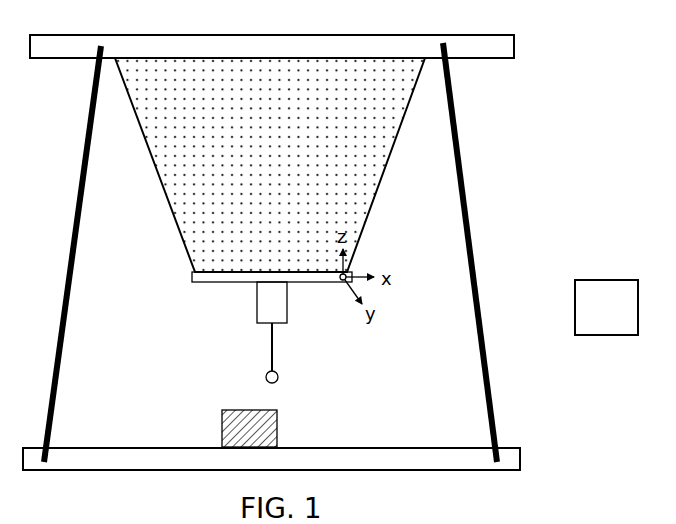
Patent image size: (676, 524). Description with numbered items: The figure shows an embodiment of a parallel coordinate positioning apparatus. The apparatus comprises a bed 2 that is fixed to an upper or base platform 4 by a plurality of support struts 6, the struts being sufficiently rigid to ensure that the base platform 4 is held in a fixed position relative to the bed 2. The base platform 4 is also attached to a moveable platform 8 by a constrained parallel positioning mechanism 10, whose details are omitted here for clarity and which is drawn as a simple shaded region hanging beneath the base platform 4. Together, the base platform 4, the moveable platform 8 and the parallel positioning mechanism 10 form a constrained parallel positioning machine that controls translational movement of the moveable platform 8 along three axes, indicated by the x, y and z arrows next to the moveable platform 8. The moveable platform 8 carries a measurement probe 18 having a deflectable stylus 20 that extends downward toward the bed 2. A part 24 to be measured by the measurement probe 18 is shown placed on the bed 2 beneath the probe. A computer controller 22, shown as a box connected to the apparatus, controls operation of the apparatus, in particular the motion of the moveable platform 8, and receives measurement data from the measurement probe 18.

The bed 2 is at (122, 447).
The base platform 4 is at (514, 42).
The support struts 6 is at (76, 253).
The moveable platform 8 is at (218, 276).
The parallel positioning mechanism 10 is at (381, 191).
The measurement probe 18 is at (292, 306).
The deflectable stylus 20 is at (268, 347).
The computer controller 22 is at (522, 458).
The part 24 is at (279, 422).